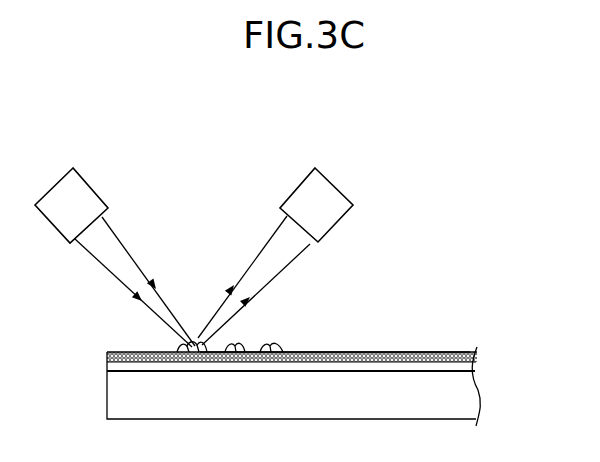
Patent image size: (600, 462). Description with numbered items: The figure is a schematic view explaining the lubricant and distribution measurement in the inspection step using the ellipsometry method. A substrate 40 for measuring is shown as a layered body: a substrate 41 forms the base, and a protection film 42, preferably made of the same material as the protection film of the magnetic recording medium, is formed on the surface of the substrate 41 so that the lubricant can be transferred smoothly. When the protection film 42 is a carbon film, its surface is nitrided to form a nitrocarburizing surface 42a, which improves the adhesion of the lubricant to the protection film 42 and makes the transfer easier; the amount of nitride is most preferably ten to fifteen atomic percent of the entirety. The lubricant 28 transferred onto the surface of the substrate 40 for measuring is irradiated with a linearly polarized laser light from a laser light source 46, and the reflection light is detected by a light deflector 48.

The lubricant 28 is at (175, 352).
The substrate for measuring 40 is at (497, 309).
The substrate 41 is at (482, 395).
The protection film 42 is at (475, 358).
The nitrocarburizing surface 42a is at (392, 352).
The laser light source 46 is at (92, 188).
The light deflector 48 is at (300, 182).